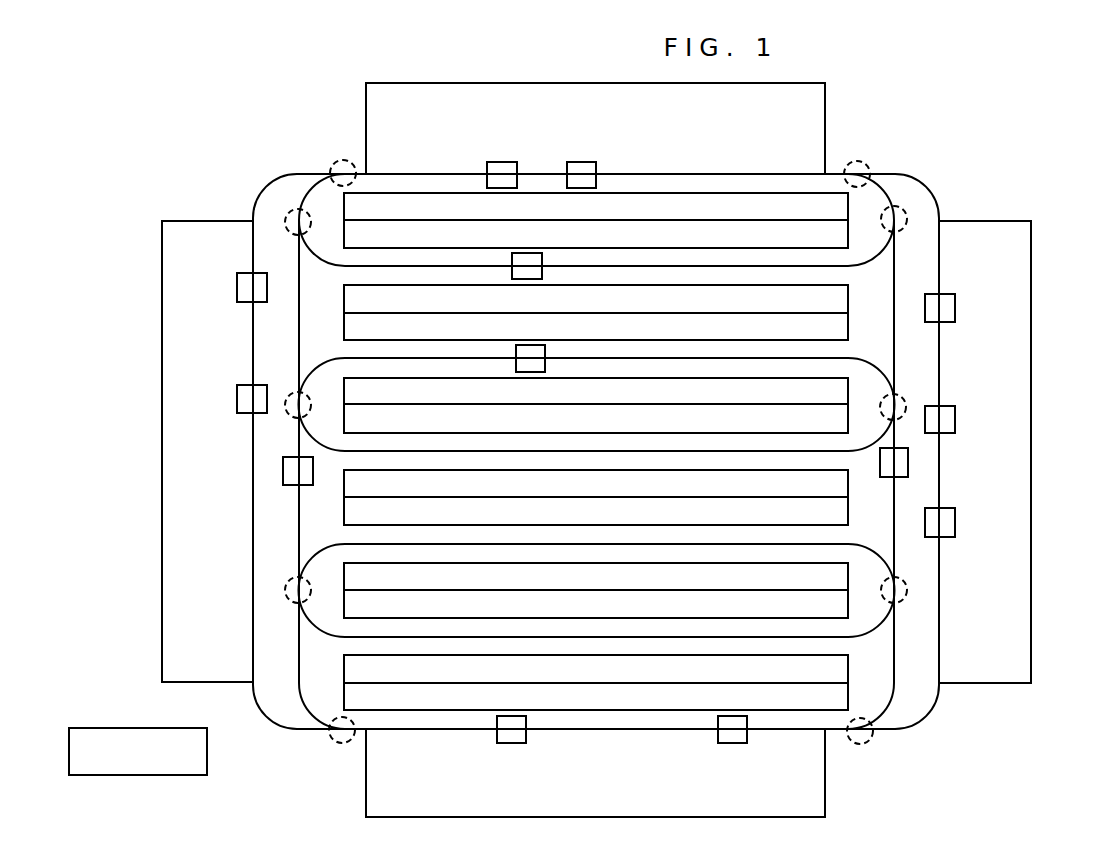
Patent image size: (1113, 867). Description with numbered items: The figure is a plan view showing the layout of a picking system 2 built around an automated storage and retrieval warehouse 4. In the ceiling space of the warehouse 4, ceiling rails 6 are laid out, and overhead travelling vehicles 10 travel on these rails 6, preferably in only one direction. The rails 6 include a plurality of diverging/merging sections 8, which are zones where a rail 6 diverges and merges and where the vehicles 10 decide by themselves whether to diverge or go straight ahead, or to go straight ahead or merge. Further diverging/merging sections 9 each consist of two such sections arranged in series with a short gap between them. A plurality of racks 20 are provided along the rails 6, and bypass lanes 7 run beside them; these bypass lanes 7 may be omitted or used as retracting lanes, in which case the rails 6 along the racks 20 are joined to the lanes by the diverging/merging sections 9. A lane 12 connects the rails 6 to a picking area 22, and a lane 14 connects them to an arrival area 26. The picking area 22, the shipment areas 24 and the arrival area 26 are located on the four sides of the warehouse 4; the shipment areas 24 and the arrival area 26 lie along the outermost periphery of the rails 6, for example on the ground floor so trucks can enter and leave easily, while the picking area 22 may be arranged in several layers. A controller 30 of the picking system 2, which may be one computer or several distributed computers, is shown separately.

The picking system 2 is at (944, 819).
The automated storage and retrieval warehouse 4 is at (869, 157).
The ceiling rails 6 is at (657, 172).
The bypass lanes 7 is at (298, 528).
The diverging/merging sections 8 is at (337, 160).
The diverging/merging sections 9 is at (294, 393).
The overhead travelling vehicles 10 is at (577, 160).
The lane 12 is at (942, 612).
The lane 14 is at (252, 602).
The racks 20 is at (835, 237).
The picking area 22 is at (1020, 450).
The shipment areas 24 is at (817, 112).
The arrival area 26 is at (170, 456).
The controller 30 is at (108, 735).